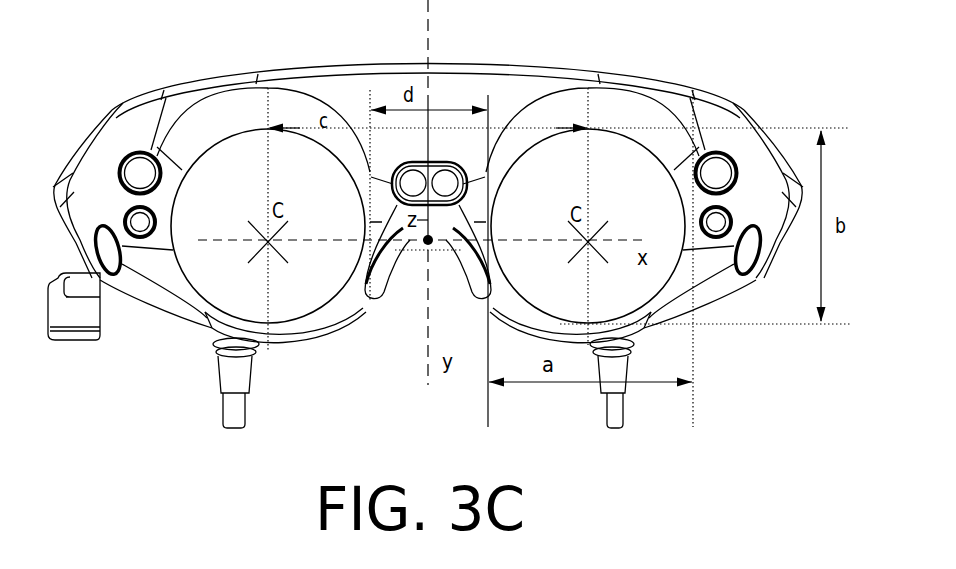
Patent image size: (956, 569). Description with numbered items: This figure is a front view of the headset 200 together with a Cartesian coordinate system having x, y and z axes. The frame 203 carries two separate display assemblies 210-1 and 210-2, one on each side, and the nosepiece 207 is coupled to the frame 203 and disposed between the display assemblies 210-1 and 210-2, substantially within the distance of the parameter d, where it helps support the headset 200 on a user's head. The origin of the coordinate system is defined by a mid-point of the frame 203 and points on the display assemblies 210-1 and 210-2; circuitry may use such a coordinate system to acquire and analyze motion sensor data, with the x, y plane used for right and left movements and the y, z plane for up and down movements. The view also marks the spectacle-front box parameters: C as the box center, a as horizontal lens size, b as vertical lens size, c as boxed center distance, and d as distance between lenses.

The headset 200 is at (668, 28).
The frame 203 is at (494, 80).
The nosepiece 207 is at (376, 298).
The display assembly 210-1 is at (659, 203).
The display assembly 210-2 is at (248, 203).